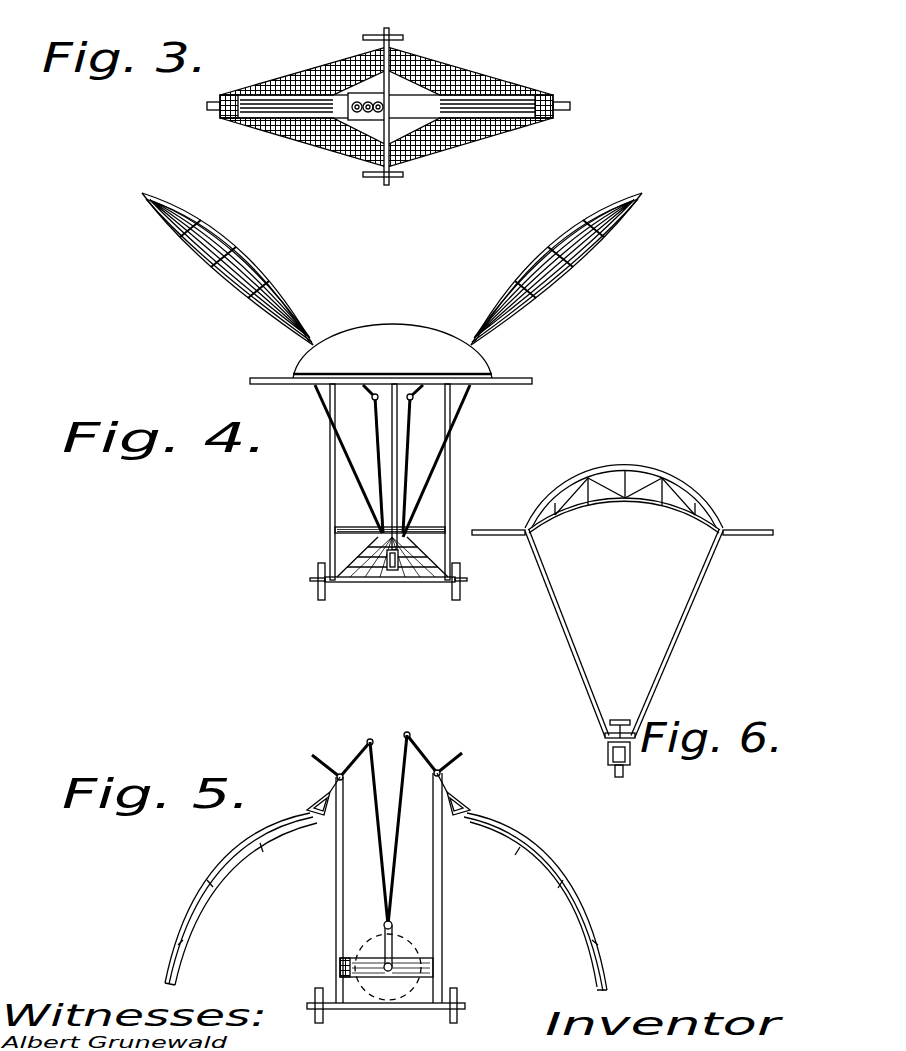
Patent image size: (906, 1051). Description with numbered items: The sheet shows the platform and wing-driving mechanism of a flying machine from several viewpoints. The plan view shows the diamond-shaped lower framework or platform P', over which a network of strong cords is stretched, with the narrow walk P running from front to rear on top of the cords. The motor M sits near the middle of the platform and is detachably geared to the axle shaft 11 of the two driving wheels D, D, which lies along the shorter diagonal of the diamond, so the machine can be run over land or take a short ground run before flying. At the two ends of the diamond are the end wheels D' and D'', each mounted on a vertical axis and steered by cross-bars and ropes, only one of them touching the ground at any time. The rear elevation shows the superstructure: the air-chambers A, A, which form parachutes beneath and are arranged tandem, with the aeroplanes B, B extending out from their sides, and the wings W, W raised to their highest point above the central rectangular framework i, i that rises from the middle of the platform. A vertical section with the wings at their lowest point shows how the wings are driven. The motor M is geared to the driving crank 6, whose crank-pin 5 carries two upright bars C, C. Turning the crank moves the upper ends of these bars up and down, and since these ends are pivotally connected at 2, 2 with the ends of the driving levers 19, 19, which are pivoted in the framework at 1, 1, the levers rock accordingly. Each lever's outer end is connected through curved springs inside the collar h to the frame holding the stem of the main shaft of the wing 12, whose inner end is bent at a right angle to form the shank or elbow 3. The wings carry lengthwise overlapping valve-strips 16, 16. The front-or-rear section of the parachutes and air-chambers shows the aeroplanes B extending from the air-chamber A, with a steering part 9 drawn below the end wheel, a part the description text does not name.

In FIG. 3, the lower framework or platform P' is at (386, 107).
In FIG. 3, the narrow walk P is at (386, 128).
In FIG. 3, the motor M is at (366, 95).
In FIG. 3, the driving wheels D is at (370, 115).
In FIG. 4, the driving wheels D is at (372, 496).
In FIG. 5, the driving wheels D is at (391, 1019).
In FIG. 6, the driving wheels D is at (597, 633).
In FIG. 3, the axle shaft 11 is at (392, 32).
In FIG. 4, the axle shaft 11 is at (357, 583).
In FIG. 5, the axle shaft 11 is at (372, 1010).
In FIG. 3, the end wheel D' is at (576, 114).
In FIG. 3, the end wheel D'' is at (191, 124).
In FIG. 4, the end wheel D'' is at (383, 584).
In FIG. 4, the wings W is at (392, 269).
In FIG. 5, the wings W is at (368, 916).
In FIG. 4, the air-chambers A is at (392, 351).
In FIG. 6, the air-chambers A is at (688, 495).
In FIG. 4, the aeroplanes B is at (222, 369).
In FIG. 6, the aeroplanes B is at (505, 522).
In FIG. 4, the upright bars C is at (408, 442).
In FIG. 5, the upright bars C is at (390, 860).
In FIG. 4, the pivotal connection 2 is at (373, 398).
In FIG. 5, the pivotal connection 2 is at (388, 747).
In FIG. 6, the steering post 9 is at (623, 720).
In FIG. 5, the rectangular framework i is at (333, 930).
In FIG. 5, the driving levers 19 is at (427, 753).
In FIG. 5, the shank or elbow 3 is at (383, 756).
In FIG. 5, the pivot 1 is at (337, 777).
In FIG. 5, the collar h is at (457, 815).
In FIG. 5, the main shaft of the wing 12 is at (185, 905).
In FIG. 5, the valve-strips 16 is at (245, 862).
In FIG. 5, the driving crank 6 is at (384, 936).
In FIG. 5, the crank-pin 5 is at (393, 925).